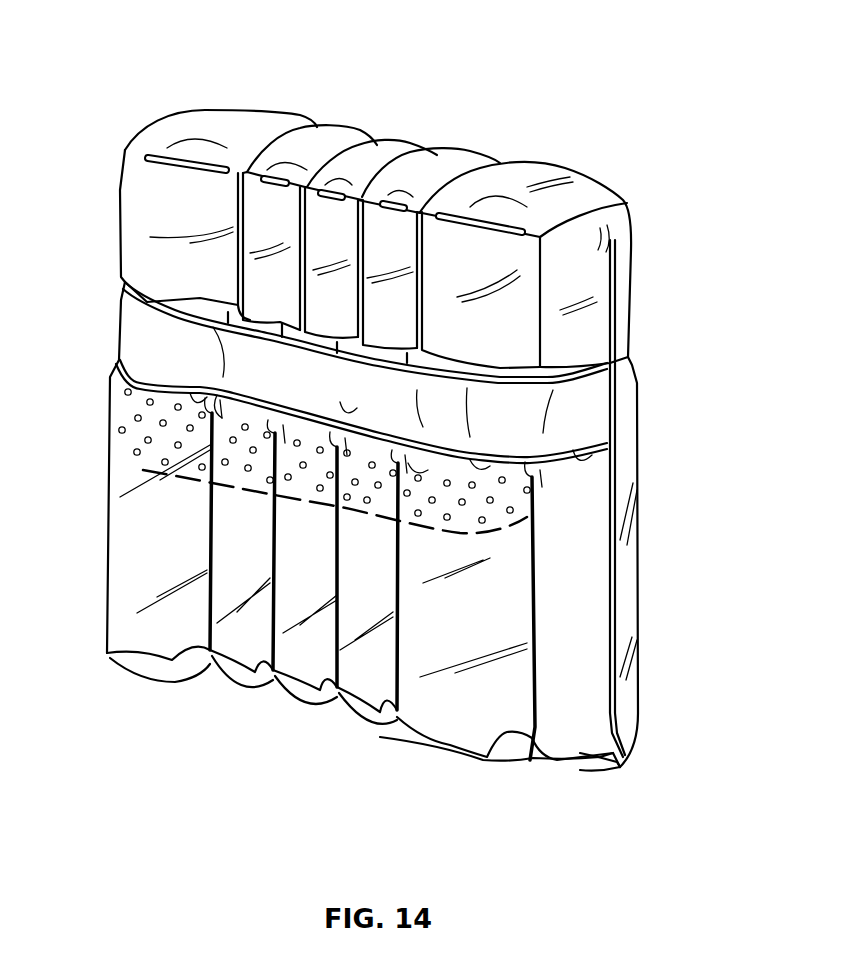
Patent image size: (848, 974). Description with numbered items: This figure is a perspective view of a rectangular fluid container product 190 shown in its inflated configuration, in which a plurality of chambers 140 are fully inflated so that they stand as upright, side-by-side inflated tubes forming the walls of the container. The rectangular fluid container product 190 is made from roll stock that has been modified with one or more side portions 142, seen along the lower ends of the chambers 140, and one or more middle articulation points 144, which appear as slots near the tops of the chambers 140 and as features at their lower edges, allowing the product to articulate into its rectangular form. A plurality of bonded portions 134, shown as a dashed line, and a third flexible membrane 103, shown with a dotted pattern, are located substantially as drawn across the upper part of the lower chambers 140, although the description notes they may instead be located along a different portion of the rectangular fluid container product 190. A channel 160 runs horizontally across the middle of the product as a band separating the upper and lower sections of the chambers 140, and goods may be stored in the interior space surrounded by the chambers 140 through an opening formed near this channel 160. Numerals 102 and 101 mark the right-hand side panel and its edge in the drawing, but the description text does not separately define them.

The rectangular fluid container product 190 is at (452, 63).
The middle articulation point 144 is at (190, 163).
The side portion 142 is at (138, 660).
The chamber 140 is at (127, 522).
The third flexible membrane 103 is at (113, 410).
The bonded portion 134 is at (140, 452).
The channel 160 is at (593, 395).
The side panel 102 is at (620, 583).
The side edge 101 is at (595, 695).